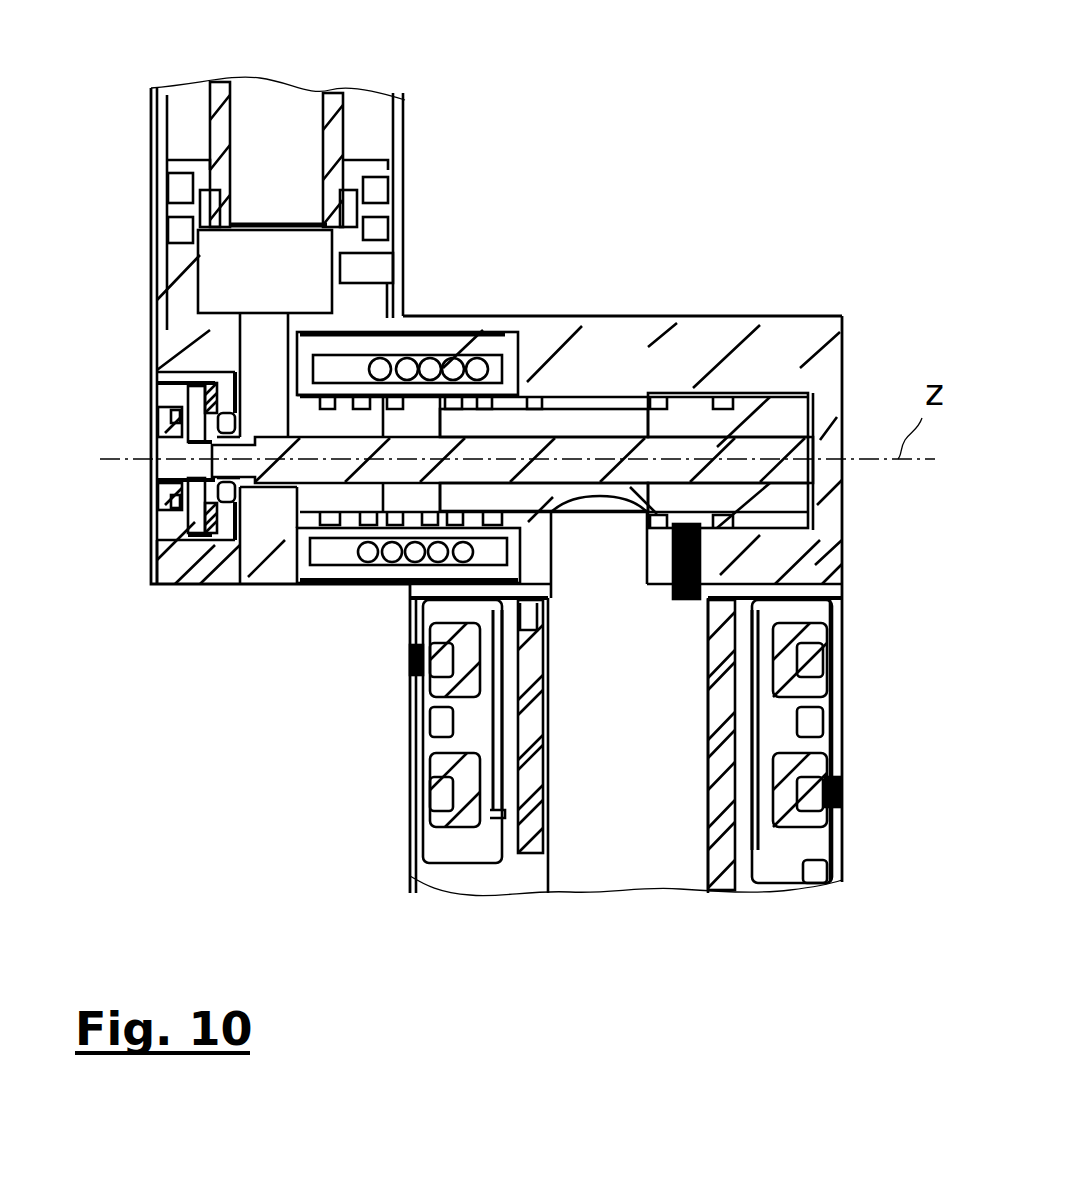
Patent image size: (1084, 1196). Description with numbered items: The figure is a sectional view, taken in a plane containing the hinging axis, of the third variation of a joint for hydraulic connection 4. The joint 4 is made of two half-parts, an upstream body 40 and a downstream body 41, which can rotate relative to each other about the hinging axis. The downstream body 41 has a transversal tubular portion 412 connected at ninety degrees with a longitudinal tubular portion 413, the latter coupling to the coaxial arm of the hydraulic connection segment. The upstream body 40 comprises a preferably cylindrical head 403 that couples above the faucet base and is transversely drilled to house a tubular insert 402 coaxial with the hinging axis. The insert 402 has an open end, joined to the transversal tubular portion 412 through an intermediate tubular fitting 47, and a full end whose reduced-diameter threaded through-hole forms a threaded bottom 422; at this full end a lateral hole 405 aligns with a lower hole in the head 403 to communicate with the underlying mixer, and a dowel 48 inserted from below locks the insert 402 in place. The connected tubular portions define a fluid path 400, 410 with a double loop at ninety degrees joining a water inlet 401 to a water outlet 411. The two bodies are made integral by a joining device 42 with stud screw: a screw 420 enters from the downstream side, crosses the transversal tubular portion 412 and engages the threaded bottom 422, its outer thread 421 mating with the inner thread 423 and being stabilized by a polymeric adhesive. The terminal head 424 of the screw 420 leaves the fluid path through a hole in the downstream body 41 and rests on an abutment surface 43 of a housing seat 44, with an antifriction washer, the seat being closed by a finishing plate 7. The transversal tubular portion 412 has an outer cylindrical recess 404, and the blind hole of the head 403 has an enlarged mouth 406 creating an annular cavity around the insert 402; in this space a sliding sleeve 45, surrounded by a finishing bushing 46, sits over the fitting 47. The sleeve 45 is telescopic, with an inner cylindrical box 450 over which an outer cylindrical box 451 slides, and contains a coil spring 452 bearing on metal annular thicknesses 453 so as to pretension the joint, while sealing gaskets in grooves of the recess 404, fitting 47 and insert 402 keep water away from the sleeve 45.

The joint for hydraulic connection 4 is at (128, 766).
The finishing plate 7 is at (152, 432).
The upstream body 40 is at (845, 600).
The downstream body 41 is at (152, 582).
The joining device 42 is at (632, 393).
The abutment surface 43 is at (210, 584).
The housing seat 44 is at (165, 386).
The sliding sleeve 45 is at (355, 312).
The finishing bushing 46 is at (405, 625).
The intermediate tubular fitting 47 is at (380, 432).
The dowel 48 is at (845, 692).
The fluid path 400 is at (632, 559).
The water inlet 401 is at (600, 592).
The tubular insert 402 is at (718, 405).
The head 403 is at (793, 360).
The outer cylindrical recess 404 is at (268, 584).
The lateral hole 405 is at (600, 592).
The mouth 406 is at (495, 340).
The fluid path 410 is at (297, 296).
The water outlet 411 is at (262, 240).
The transversal tubular portion 412 is at (210, 584).
The longitudinal tubular portion 413 is at (185, 258).
The screw 420 is at (605, 420).
The outer thread 421 is at (845, 487).
The threaded bottom 422 is at (845, 345).
The inner thread 423 is at (843, 535).
The terminal head 424 is at (160, 518).
The inner cylindrical box 450 is at (430, 372).
The outer cylindrical box 451 is at (395, 345).
The coil spring 452 is at (365, 584).
The annular thicknesses 453 is at (340, 580).